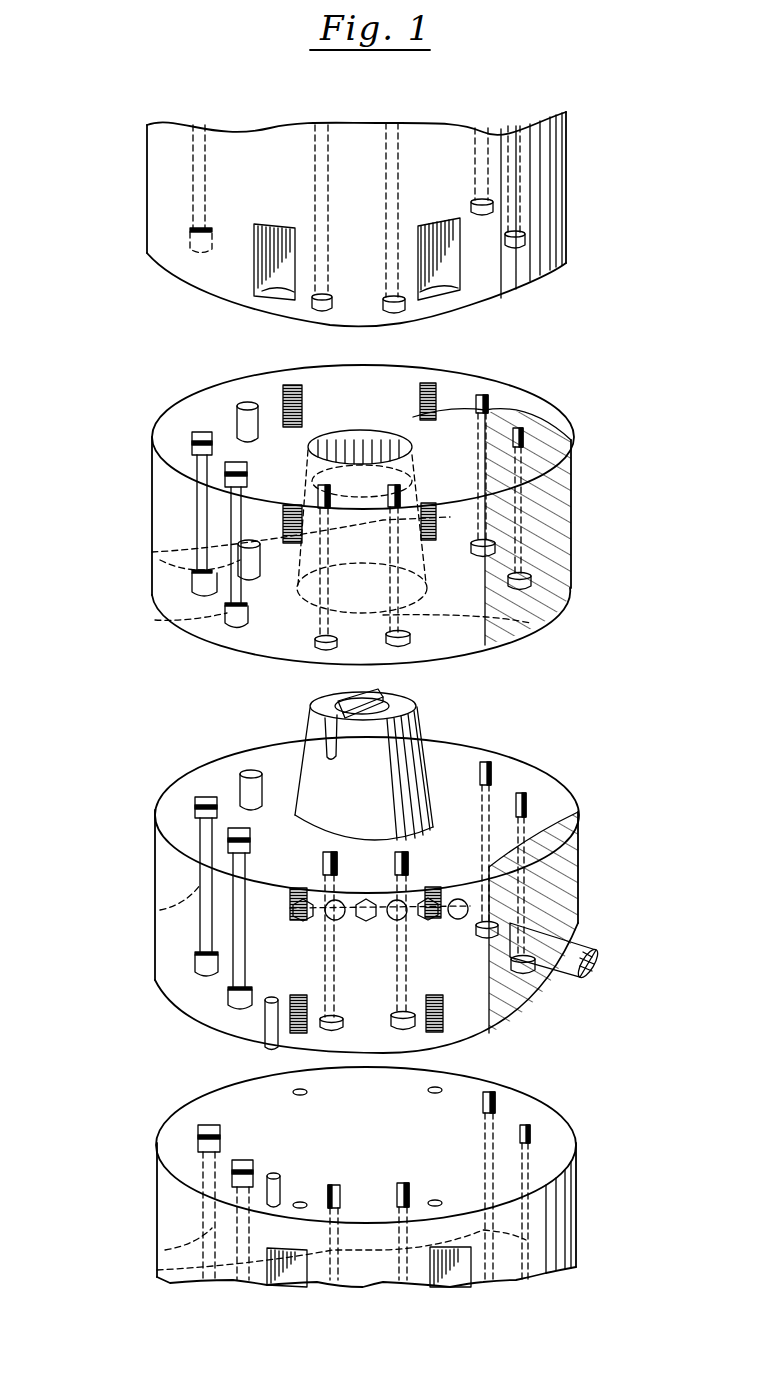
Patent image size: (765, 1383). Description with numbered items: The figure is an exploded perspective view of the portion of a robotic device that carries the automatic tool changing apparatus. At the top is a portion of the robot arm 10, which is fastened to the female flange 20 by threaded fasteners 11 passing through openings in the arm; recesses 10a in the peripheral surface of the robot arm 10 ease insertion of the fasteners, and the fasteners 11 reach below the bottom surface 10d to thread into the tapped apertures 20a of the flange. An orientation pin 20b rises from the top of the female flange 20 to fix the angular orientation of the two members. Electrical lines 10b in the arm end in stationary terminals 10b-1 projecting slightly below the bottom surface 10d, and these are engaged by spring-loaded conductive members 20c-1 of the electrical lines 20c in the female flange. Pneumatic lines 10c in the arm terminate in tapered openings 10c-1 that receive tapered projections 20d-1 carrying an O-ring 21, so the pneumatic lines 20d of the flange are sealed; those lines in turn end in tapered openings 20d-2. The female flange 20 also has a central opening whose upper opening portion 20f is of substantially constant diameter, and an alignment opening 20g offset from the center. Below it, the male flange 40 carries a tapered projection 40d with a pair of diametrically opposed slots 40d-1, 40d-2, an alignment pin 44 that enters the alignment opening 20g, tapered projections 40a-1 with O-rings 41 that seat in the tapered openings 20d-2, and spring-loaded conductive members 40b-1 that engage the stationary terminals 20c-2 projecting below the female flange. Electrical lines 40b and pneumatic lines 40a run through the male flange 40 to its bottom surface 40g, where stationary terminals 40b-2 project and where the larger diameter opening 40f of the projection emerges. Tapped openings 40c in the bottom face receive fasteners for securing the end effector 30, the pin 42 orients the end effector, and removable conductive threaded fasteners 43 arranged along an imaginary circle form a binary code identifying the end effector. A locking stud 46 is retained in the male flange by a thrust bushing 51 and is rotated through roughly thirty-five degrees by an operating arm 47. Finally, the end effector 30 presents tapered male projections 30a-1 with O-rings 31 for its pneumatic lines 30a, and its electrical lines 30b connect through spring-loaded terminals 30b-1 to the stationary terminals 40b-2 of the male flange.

The robot arm 10 is at (128, 187).
The recesses 10a is at (272, 225).
The electrical lines 10b is at (483, 163).
The stationary terminals 10b-1 is at (493, 205).
The pneumatic lines 10c is at (200, 165).
The tapered opening 10c-1 is at (195, 243).
The bottom surface 10d is at (552, 272).
The threaded fasteners 11 is at (268, 292).
The female flange 20 is at (130, 522).
The tapped apertures 20a is at (293, 385).
The orientation pin 20b is at (240, 402).
The electrical lines 20c is at (486, 463).
The spring-loaded conductive members 20c-1 is at (488, 398).
The stationary terminals 20c-2 is at (495, 545).
The pneumatic lines 20d is at (205, 525).
The tapered projection 20d-1 is at (195, 432).
The tapered openings 20d-2 is at (226, 618).
The upper opening portion 20f is at (352, 437).
The alignment opening 20g is at (256, 585).
The O-ring 21 is at (225, 477).
The end effector 30 is at (130, 1150).
The pneumatic lines 30a is at (213, 1230).
The tapered male projections 30a-1 is at (200, 1130).
The electrical lines 30b is at (493, 1183).
The spring-loaded terminals 30b-1 is at (340, 1185).
The O-rings 31 is at (232, 1175).
The male flange 40 is at (130, 840).
The pneumatic lines 40a is at (240, 903).
The tapered projections 40a-1 is at (197, 797).
The electrical lines 40b is at (490, 862).
The spring-loaded conductive members 40b-1 is at (487, 762).
The stationary terminals 40b-2 is at (498, 928).
The tapped openings 40c is at (296, 888).
The tapered projection 40d is at (415, 718).
The slot 40d-1 is at (326, 752).
The slot 40d-2 is at (388, 697).
The larger diameter opening 40f is at (205, 778).
The bottom surface 40g is at (577, 850).
The O-rings 41 is at (230, 843).
The pin 42 is at (266, 1045).
The threaded fasteners 43 is at (305, 920).
The alignment pin 44 is at (240, 775).
The locking stud 46 is at (345, 700).
The operating arm 47 is at (593, 950).
The thrust bushing 51 is at (240, 1118).